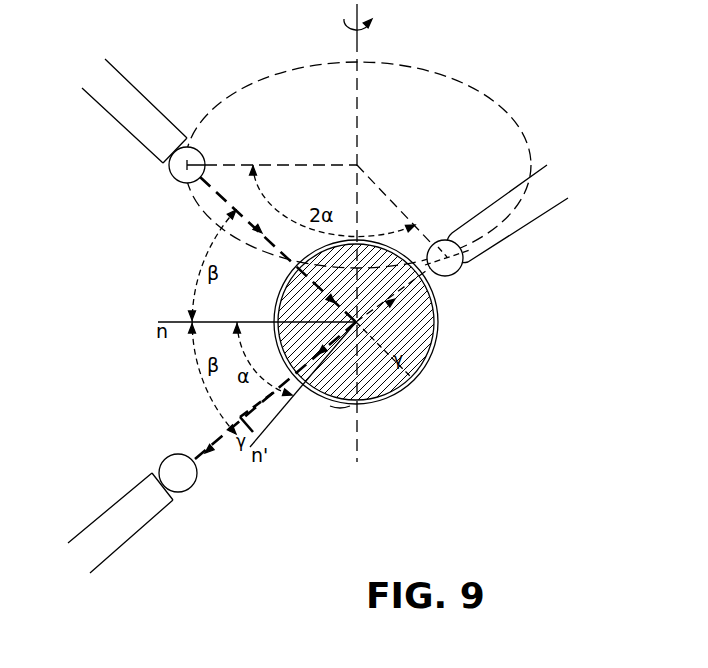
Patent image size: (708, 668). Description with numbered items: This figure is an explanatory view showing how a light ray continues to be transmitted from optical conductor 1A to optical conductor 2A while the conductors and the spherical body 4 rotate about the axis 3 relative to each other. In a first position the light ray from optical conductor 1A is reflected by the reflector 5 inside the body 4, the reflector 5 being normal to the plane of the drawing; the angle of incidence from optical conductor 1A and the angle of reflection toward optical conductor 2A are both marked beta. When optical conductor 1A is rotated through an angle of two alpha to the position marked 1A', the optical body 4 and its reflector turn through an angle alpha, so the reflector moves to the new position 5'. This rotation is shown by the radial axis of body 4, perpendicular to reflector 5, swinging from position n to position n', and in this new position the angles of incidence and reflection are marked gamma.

The optical conductor 1A is at (143, 131).
The optical conductor (rotated position) 1A' is at (496, 233).
The optical conductor 2A is at (142, 513).
The axis 3 is at (360, 233).
The spherical body 4 is at (434, 354).
The reflector 5 is at (339, 422).
The reflector (rotated position) 5' is at (375, 322).